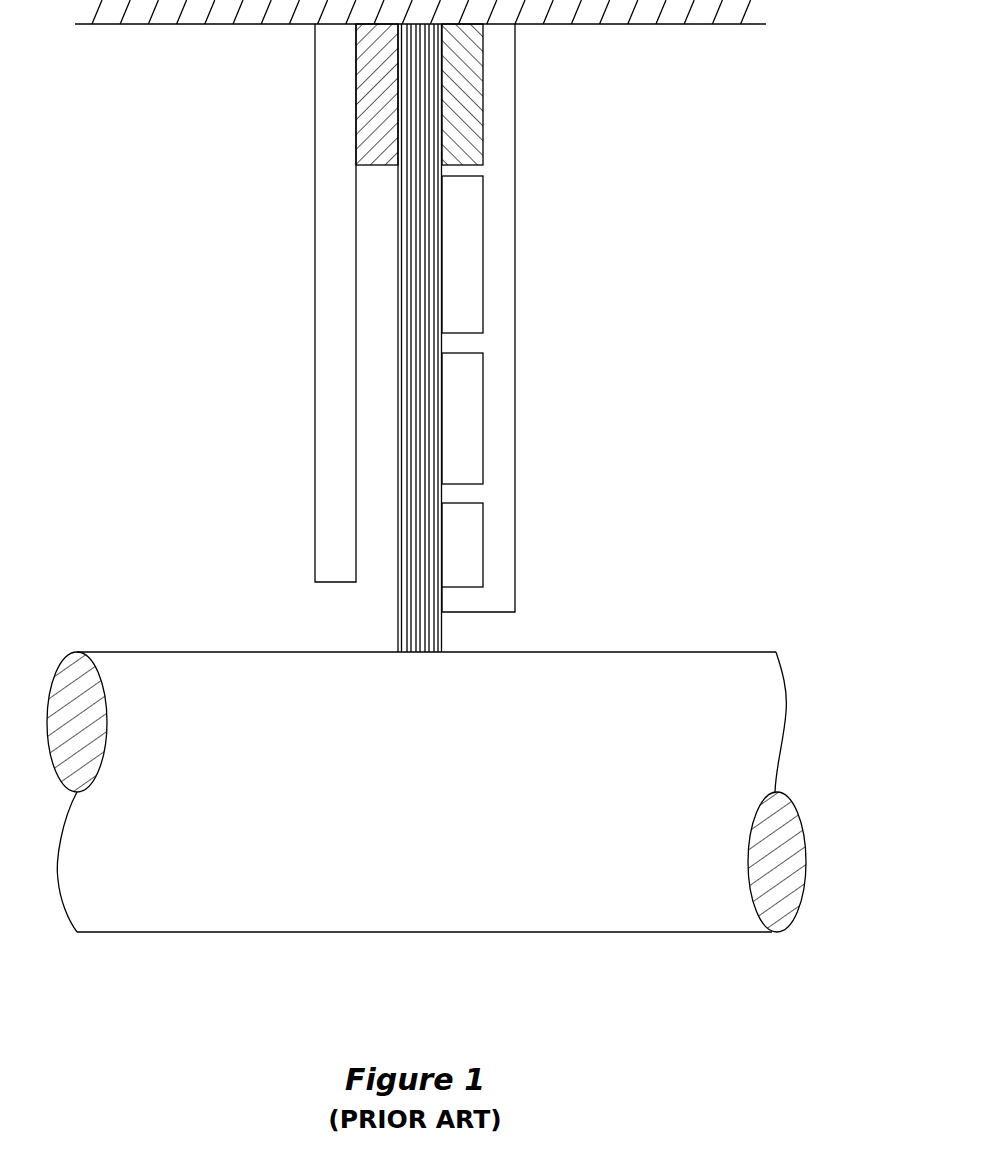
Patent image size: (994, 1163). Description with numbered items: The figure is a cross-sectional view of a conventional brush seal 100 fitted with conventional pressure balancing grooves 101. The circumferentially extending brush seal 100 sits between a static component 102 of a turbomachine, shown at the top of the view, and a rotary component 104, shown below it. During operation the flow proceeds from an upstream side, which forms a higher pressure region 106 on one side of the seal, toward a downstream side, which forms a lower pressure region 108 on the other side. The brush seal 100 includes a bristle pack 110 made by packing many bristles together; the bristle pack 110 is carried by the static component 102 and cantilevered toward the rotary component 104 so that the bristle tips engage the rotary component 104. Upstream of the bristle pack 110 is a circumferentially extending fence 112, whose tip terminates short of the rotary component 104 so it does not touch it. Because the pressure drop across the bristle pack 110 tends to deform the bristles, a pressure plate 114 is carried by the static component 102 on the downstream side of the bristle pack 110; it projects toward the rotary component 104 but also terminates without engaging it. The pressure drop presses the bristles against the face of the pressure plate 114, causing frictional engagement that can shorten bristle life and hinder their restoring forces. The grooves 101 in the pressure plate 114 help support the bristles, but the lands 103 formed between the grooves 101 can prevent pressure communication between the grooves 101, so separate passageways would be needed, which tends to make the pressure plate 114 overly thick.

The brush seal 100 is at (602, 558).
The pressure balancing grooves 101 is at (483, 540).
The static component 102 is at (198, 15).
The lands 103 is at (405, 350).
The rotary component 104 is at (172, 663).
The higher pressure region 106 is at (157, 358).
The lower pressure region 108 is at (699, 372).
The bristle pack 110 is at (400, 462).
The fence 112 is at (335, 282).
The pressure plate 114 is at (497, 240).